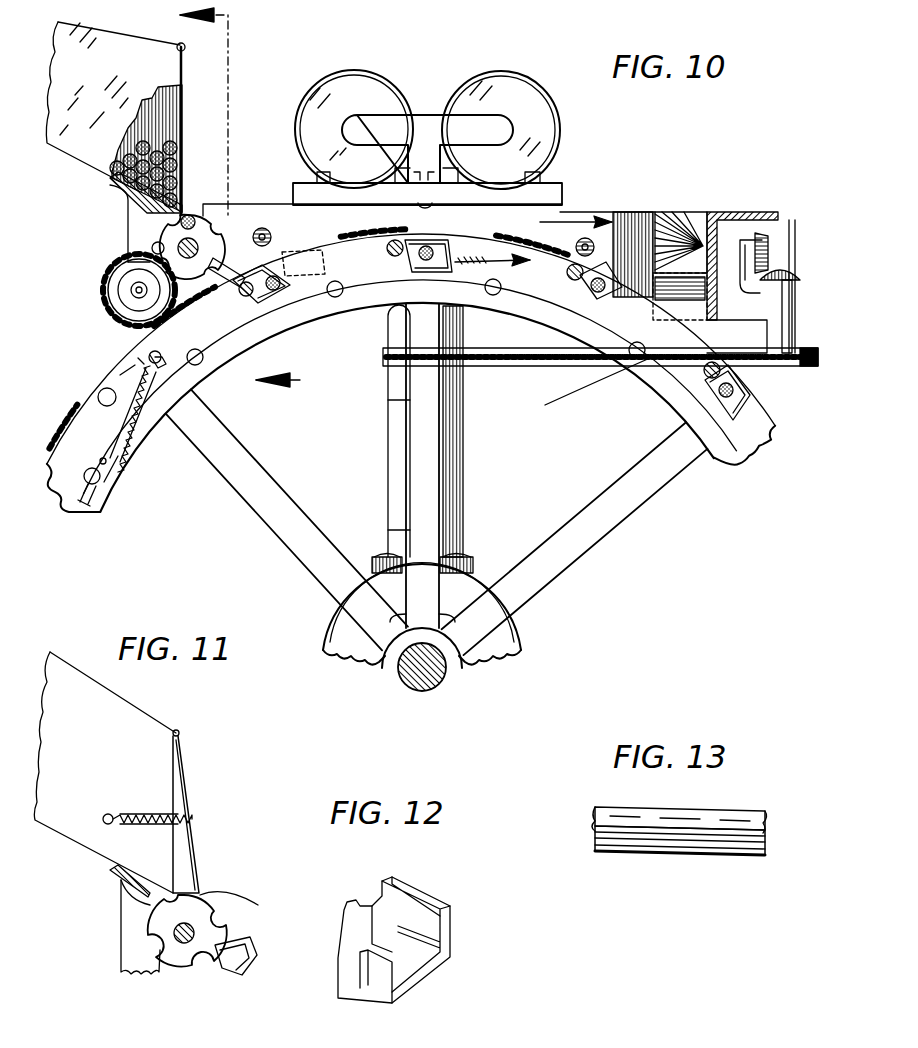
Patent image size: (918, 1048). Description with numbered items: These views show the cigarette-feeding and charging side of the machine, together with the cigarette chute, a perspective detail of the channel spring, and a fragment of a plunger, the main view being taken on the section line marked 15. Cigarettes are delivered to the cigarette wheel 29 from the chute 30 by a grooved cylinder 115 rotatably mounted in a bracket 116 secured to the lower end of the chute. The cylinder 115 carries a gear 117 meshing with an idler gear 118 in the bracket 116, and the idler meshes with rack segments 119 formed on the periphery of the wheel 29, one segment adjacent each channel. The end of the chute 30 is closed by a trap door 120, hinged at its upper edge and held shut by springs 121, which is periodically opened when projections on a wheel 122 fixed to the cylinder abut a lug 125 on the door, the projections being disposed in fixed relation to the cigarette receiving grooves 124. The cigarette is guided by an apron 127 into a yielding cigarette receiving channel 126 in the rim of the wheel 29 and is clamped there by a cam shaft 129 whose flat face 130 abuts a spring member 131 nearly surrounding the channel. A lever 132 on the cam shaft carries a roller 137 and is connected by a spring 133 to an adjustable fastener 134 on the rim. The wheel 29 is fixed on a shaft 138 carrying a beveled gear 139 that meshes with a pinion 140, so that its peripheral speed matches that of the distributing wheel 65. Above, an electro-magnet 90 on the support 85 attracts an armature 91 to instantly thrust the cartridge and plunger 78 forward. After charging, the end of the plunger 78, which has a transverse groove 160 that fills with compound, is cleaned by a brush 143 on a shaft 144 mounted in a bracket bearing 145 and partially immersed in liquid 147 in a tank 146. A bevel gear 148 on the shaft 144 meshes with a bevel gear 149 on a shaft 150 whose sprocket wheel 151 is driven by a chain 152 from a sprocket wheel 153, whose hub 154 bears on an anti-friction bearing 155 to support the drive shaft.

In FIG. 10, the section line 15- 15 is at (240, 213).
In FIG. 10, the cigarette wheel 29 is at (725, 470).
In FIG. 10, the chute 30 is at (162, 62).
In FIG. 11, the chute 30 is at (112, 722).
In FIG. 10, the distributing wheel 65 is at (620, 210).
In FIG. 13, the plunger 78 is at (686, 860).
In FIG. 10, the support 85 is at (578, 198).
In FIG. 10, the electro-magnet 90 is at (348, 93).
In FIG. 10, the armature 91 is at (422, 130).
In FIG. 10, the grooved cylinder 115 is at (165, 228).
In FIG. 10, the bracket 116 is at (128, 190).
In FIG. 11, the bracket 116 is at (125, 950).
In FIG. 10, the gear 117 is at (160, 248).
In FIG. 10, the idler gear 118 is at (118, 292).
In FIG. 10, the rack segments 119 is at (128, 322).
In FIG. 10, the trap door 120 is at (183, 102).
In FIG. 11, the trap door 120 is at (182, 757).
In FIG. 11, the springs 121 is at (150, 810).
In FIG. 11, the wheel 122 is at (160, 915).
In FIG. 10, the cigarette receiving grooves 124 is at (158, 250).
In FIG. 11, the lug 125 is at (195, 890).
In FIG. 10, the cigarette receiving channel 126 is at (265, 300).
In FIG. 10, the apron 127 is at (240, 280).
In FIG. 11, the apron 127 is at (225, 975).
In FIG. 10, the cam shaft 129 is at (390, 278).
In FIG. 10, the flat face 130 is at (395, 270).
In FIG. 10, the spring member 131 is at (460, 268).
In FIG. 12, the spring member 131 is at (372, 980).
In FIG. 10, the lever 132 is at (140, 372).
In FIG. 10, the spring 133 is at (125, 445).
In FIG. 10, the fastener 134 is at (95, 495).
In FIG. 10, the roller 137 is at (195, 390).
In FIG. 10, the shaft 138 is at (430, 690).
In FIG. 10, the beveled gear 139 is at (500, 635).
In FIG. 10, the pinion 140 is at (520, 585).
In FIG. 10, the brush 143 is at (665, 218).
In FIG. 11, the brush 143 is at (225, 898).
In FIG. 10, the shaft 144 is at (770, 250).
In FIG. 10, the bracket bearing 145 is at (545, 405).
In FIG. 10, the tank 146 is at (600, 392).
In FIG. 10, the liquid 147 is at (710, 275).
In FIG. 10, the bevel gear 148 is at (760, 232).
In FIG. 10, the bevel gear 149 is at (785, 265).
In FIG. 10, the shaft 150 is at (737, 336).
In FIG. 10, the sprocket wheel 151 is at (802, 380).
In FIG. 10, the chain 152 is at (480, 370).
In FIG. 10, the sprocket wheel 153 is at (380, 375).
In FIG. 10, the hub 154 is at (398, 370).
In FIG. 10, the anti-friction bearing 155 is at (470, 460).
In FIG. 13, the transverse groove 160 is at (588, 840).